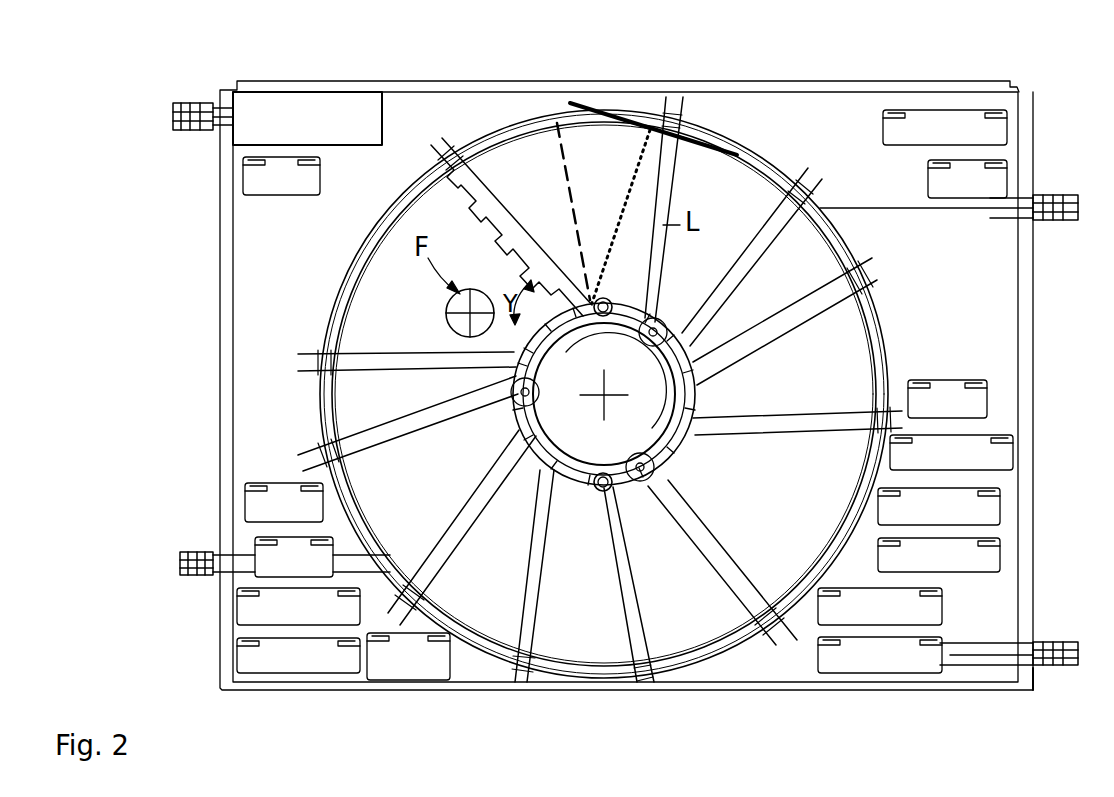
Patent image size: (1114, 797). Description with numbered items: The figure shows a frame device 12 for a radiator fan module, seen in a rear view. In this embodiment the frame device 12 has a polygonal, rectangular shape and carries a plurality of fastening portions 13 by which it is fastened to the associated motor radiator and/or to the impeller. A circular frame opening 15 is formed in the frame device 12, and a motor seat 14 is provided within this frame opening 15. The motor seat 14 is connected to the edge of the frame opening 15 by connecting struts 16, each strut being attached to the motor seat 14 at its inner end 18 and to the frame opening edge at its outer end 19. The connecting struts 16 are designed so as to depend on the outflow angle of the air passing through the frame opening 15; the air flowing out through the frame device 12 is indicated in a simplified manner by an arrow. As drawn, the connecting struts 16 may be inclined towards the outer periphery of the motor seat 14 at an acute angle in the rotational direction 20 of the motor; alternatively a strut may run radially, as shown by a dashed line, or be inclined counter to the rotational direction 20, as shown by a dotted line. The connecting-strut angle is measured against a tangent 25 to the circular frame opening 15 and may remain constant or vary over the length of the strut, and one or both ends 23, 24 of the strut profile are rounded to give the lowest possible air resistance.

The frame device 12 is at (992, 298).
The fastening portions 13 is at (1062, 640).
The motor seat 14 is at (665, 445).
The frame opening 15 is at (470, 528).
The connecting struts 16 is at (625, 603).
The inner end 18 is at (628, 488).
The outer end 19 is at (642, 660).
The rotational direction 20 is at (572, 360).
The end of the profile 23 is at (666, 198).
The end of the profile 24 is at (650, 235).
The tangent 25 is at (708, 132).